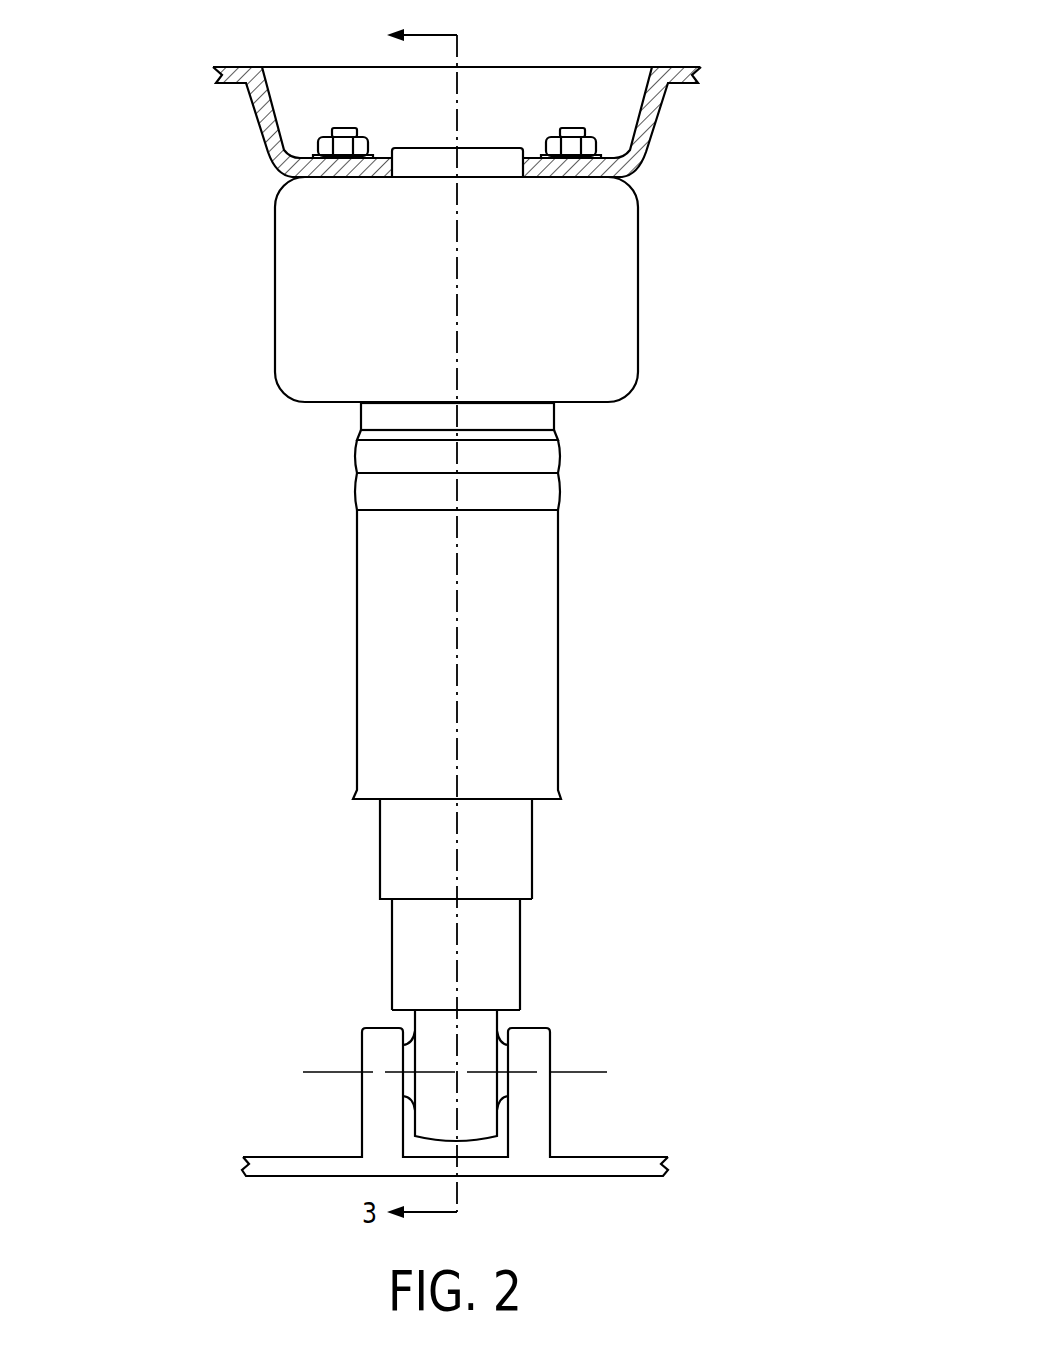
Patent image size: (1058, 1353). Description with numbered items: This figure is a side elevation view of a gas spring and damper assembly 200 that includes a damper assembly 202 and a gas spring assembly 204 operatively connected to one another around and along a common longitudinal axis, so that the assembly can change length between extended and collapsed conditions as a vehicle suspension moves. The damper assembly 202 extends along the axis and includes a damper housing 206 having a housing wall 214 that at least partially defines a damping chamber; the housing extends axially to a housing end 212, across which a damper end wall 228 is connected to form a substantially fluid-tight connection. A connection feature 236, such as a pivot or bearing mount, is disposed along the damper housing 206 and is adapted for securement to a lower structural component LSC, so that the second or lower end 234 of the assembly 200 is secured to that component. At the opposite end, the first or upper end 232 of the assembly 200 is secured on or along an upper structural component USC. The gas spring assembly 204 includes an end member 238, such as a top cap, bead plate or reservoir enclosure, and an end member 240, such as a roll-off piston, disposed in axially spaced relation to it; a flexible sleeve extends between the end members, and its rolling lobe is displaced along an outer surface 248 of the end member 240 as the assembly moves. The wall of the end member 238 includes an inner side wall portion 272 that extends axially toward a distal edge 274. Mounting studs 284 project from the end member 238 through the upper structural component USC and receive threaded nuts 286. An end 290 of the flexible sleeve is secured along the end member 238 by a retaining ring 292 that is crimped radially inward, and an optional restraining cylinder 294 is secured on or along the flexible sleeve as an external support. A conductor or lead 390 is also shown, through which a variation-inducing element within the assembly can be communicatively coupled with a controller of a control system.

The gas spring and damper assembly 200 is at (724, 107).
The damper assembly 202 is at (667, 918).
The gas spring assembly 204 is at (642, 579).
The damper housing 206 is at (427, 937).
The housing end 212 is at (358, 1009).
The housing wall 214 is at (392, 968).
The damper end wall 228 is at (510, 1010).
The first or upper end 232 is at (709, 154).
The second or lower end 234 is at (639, 983).
The connection feature 236 is at (478, 1127).
The end member 238 is at (642, 302).
The end member 240 is at (510, 847).
The outer surface 248 is at (533, 868).
The inner side wall portion 272 is at (472, 157).
The distal edge 274 is at (444, 148).
The mounting studs 284 is at (343, 130).
The threaded nuts 286 is at (325, 148).
The end 290 is at (333, 420).
The retaining ring 292 is at (378, 418).
The restraining cylinder 294 is at (354, 650).
The conductor or lead 390 is at (493, 148).
The upper structural component USC is at (263, 67).
The lower structural component LSC is at (286, 1167).